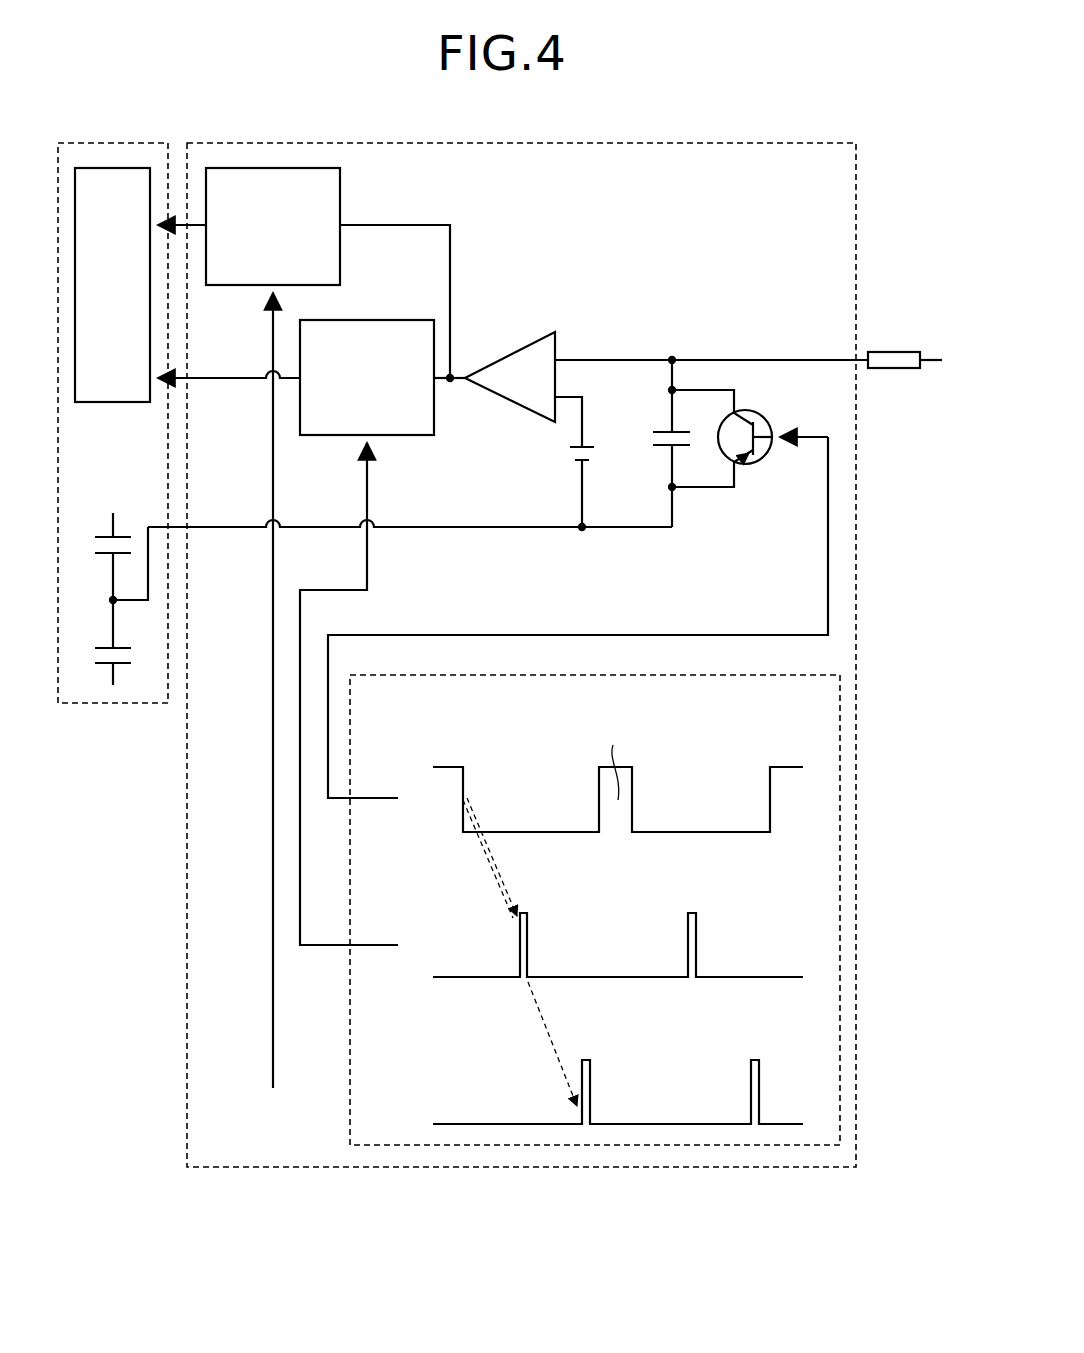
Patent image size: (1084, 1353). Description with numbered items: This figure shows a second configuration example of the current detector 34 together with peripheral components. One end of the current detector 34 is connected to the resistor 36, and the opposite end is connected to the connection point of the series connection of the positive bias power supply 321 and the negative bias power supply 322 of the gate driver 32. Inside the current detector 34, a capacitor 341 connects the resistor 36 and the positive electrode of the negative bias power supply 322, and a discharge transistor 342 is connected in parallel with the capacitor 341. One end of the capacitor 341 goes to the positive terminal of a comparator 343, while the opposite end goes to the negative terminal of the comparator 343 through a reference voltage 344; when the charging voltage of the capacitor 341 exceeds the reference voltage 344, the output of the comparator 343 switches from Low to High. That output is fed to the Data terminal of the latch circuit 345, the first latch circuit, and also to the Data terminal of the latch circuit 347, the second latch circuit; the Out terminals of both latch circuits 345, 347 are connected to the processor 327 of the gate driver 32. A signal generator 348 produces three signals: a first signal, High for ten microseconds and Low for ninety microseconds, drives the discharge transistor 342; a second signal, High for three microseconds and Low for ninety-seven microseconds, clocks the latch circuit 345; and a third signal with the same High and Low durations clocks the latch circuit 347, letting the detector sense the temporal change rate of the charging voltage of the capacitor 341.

The gate driver 32 is at (110, 143).
The processor 327 is at (118, 402).
The positive bias power supply 321 is at (100, 537).
The negative bias power supply 322 is at (105, 663).
The current detector 34 is at (478, 143).
The latch circuit 347 is at (271, 168).
The latch circuit 345 is at (384, 320).
The comparator 343 is at (497, 357).
The reference voltage 344 is at (575, 460).
The capacitor 341 is at (655, 447).
The discharge transistor 342 is at (750, 465).
The resistor 36 is at (893, 352).
The signal generator 348 is at (840, 918).